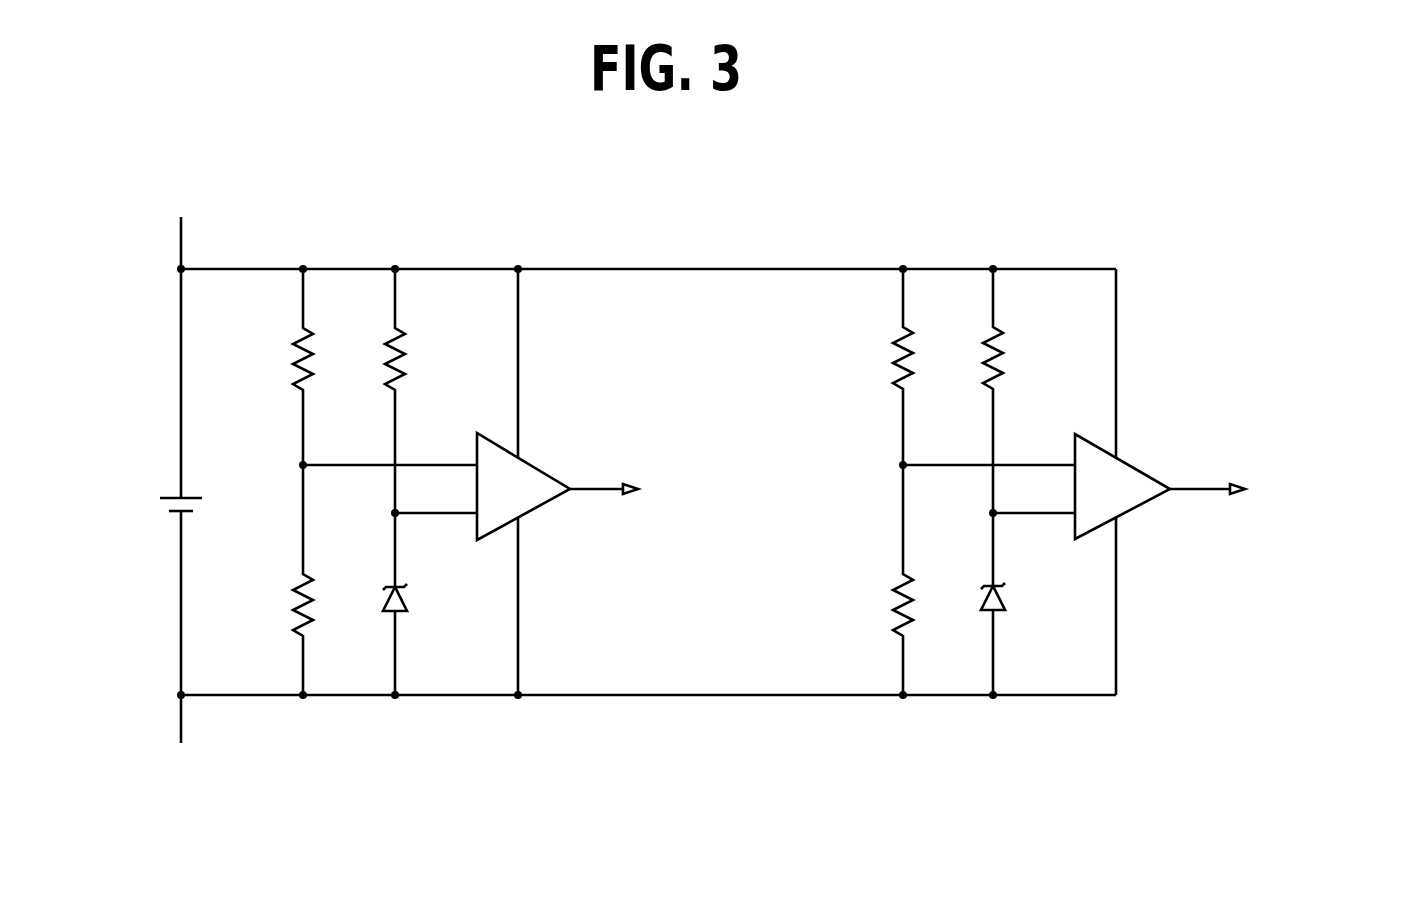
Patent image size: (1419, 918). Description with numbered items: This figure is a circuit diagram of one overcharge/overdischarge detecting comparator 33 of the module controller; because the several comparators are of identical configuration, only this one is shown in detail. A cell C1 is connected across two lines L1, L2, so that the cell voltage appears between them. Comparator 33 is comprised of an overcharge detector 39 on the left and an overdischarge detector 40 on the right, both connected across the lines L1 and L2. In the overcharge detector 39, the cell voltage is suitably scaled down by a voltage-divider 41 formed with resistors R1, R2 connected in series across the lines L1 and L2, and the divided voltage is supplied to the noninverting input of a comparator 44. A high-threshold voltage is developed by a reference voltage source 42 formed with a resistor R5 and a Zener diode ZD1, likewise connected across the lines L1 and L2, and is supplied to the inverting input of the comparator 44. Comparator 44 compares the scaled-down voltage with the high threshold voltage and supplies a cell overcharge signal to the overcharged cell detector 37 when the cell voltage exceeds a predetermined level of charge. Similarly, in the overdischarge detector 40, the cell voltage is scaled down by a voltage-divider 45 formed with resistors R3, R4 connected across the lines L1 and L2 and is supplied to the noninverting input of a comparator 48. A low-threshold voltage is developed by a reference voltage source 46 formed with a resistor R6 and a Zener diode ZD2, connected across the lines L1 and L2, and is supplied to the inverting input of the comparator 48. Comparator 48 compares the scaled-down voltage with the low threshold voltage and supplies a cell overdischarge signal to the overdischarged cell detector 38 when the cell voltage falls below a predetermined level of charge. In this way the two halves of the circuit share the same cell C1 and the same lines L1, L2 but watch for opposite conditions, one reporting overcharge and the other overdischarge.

The comparator 33 is at (674, 167).
The overcharge detector 39 is at (472, 214).
The overdischarge detector 40 is at (1078, 214).
The voltage-divider 41 is at (287, 497).
The reference voltage source 42 is at (380, 548).
The comparator 44 is at (531, 461).
The voltage-divider 45 is at (888, 500).
The reference voltage source 46 is at (978, 548).
The comparator 48 is at (1128, 461).
The overcharged cell detector 37 is at (723, 487).
The overdischarged cell detector 38 is at (1339, 487).
The line L1 is at (677, 269).
The line L2 is at (677, 695).
The cell C1 is at (162, 480).
The resistor R1 is at (287, 365).
The resistor R2 is at (287, 582).
The resistor R3 is at (887, 365).
The resistor R4 is at (887, 582).
The resistor R5 is at (376, 389).
The resistor R6 is at (975, 389).
The Zener diode ZD1 is at (421, 606).
The Zener diode ZD2 is at (1020, 606).